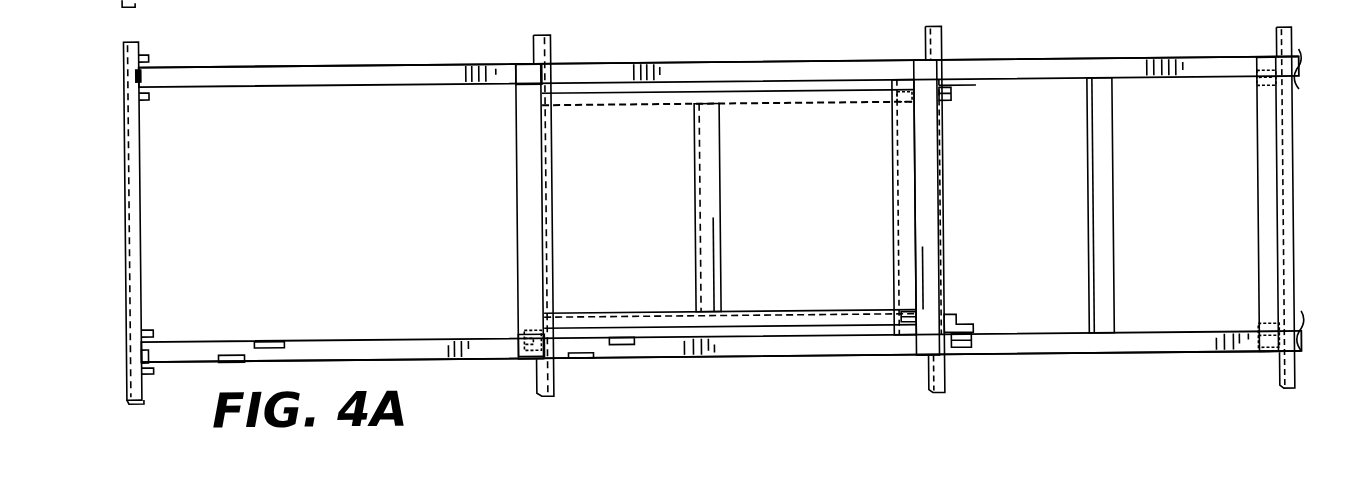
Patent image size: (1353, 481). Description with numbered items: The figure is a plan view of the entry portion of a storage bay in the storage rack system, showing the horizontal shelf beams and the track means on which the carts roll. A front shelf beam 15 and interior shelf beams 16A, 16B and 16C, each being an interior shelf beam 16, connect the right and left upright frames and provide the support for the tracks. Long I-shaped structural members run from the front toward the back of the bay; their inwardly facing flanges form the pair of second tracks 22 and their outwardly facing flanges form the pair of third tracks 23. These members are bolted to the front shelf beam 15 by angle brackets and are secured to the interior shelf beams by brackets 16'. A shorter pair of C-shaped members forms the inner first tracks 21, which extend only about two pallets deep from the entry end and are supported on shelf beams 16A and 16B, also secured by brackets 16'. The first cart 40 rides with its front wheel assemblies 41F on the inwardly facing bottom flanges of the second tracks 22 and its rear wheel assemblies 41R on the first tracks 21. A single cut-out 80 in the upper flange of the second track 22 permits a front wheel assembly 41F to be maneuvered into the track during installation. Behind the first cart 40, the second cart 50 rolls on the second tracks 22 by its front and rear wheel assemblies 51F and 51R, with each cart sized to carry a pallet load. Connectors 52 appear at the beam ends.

The front shelf beam 15 is at (140, 171).
The interior shelf beam 16 is at (894, 9).
The bracket 16' is at (568, 13).
The interior shelf beam 16A is at (582, 44).
The interior shelf beam 16B is at (945, 41).
The interior shelf beam 16C is at (1327, 15).
The first track 21 is at (953, 104).
The second track 22 is at (389, 88).
The third track 23 is at (365, 68).
The first cart 40 is at (733, 37).
The front wheel assembly 41F is at (540, 334).
The rear wheel assembly 41R is at (906, 329).
The second cart 50 is at (1190, 25).
The front wheel assembly 51F is at (963, 356).
The rear wheel assembly 51R is at (1270, 360).
The connector 52 is at (747, 208).
The cut-out 80 is at (269, 343).